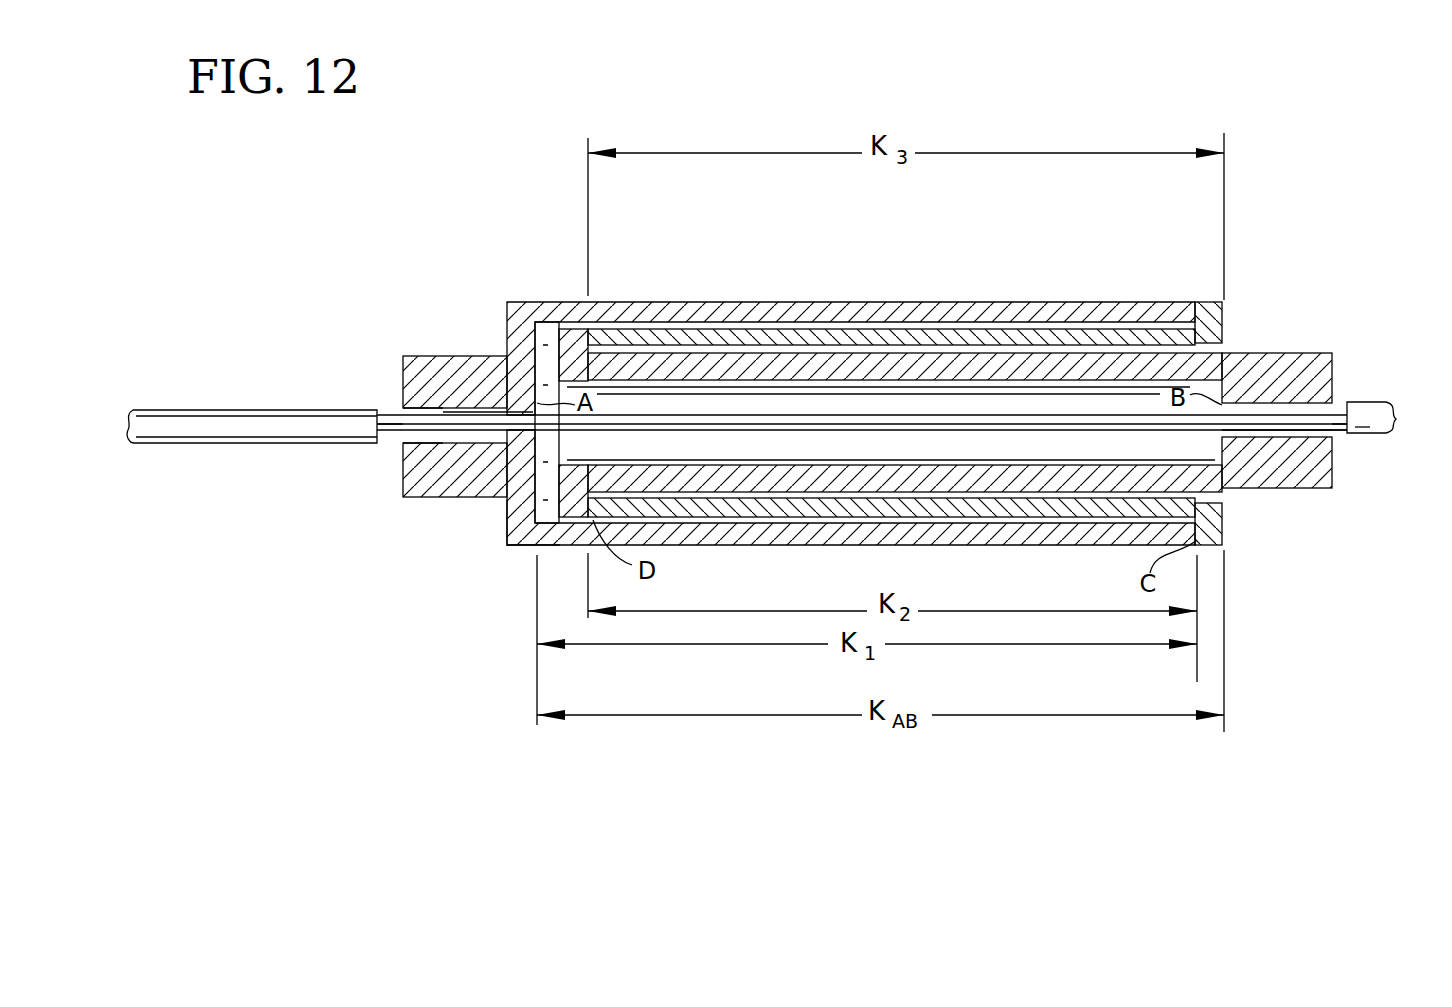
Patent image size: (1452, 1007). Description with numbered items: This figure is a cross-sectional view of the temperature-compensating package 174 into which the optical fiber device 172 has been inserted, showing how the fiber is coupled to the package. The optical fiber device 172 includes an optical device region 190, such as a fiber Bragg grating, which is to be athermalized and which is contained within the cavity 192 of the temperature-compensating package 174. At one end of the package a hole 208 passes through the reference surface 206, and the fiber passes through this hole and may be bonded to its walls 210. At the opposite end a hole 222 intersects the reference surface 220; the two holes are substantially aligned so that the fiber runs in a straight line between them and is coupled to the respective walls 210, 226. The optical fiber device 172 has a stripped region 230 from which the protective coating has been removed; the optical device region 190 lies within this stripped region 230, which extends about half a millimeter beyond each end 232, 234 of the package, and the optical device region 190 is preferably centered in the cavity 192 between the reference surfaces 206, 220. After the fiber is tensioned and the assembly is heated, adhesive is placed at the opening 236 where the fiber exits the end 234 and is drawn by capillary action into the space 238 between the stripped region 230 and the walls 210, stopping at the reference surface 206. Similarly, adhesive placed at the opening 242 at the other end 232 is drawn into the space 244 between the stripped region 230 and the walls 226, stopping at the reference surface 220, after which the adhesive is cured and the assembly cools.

The optical fiber device 172 is at (252, 444).
The temperature-compensating package 174 is at (563, 302).
The optical device region 190 is at (888, 414).
The cavity 192 is at (627, 405).
The reference surface 206 is at (517, 545).
The hole 208 is at (400, 408).
The walls 210 is at (468, 408).
The reference surface 220 is at (1215, 383).
The hole 222 is at (1349, 457).
The walls 226 is at (1273, 393).
The stripped region 230 is at (390, 412).
The end 232 is at (1337, 480).
The end 234 is at (397, 487).
The opening 236 is at (393, 433).
The space 238 is at (430, 408).
The opening 242 is at (1335, 398).
The space 244 is at (1258, 432).